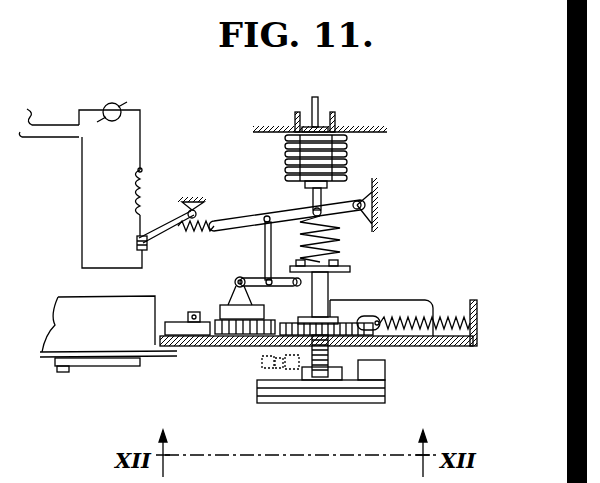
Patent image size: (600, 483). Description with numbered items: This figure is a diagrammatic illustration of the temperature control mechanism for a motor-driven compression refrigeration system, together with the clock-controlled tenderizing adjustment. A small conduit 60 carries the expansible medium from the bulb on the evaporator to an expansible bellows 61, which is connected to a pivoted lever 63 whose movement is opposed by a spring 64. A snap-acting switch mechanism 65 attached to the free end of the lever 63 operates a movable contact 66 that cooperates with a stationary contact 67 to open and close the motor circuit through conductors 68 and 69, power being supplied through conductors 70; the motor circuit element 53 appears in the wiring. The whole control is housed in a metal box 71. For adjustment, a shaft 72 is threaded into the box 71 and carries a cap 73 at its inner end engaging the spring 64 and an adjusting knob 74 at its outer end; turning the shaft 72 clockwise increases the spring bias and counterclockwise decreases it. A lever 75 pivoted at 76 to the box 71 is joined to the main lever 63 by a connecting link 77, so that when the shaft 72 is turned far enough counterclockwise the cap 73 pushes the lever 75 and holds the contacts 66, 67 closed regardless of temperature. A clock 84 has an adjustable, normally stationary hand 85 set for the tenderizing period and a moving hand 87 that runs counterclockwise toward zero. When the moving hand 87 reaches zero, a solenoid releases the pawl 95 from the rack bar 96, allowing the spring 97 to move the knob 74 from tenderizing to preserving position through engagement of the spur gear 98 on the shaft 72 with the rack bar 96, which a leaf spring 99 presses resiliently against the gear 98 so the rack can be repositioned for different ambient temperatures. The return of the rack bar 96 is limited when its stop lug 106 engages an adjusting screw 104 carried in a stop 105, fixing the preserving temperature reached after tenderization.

The motor 53 is at (122, 107).
The conduit 60 is at (322, 110).
The expansible bellows 61 is at (287, 145).
The pivoted lever 63 is at (262, 218).
The spring 64 is at (340, 238).
The snap-acting switch mechanism 65 is at (161, 214).
The movable contact 66 is at (148, 241).
The stationary contact 67 is at (137, 246).
The conductor 68 is at (79, 205).
The conductor 69 is at (140, 157).
The conductors 70 is at (45, 115).
The metal box 71 is at (430, 347).
The shaft 72 is at (322, 288).
The cap 73 is at (302, 260).
The adjusting knob 74 is at (370, 403).
The lever 75 is at (269, 271).
The pivot 76 is at (235, 282).
The connecting link 77 is at (265, 246).
The clock 84 is at (62, 318).
The adjustable hand 85 is at (114, 366).
The moving hand 87 is at (80, 372).
The pawl 95 is at (190, 325).
The rack bar 96 is at (212, 346).
The spring 97 is at (440, 322).
The spur gear 98 is at (362, 318).
The leaf spring 99 is at (400, 312).
The adjusting screw 104 is at (262, 365).
The stop 105 is at (290, 378).
The stop lug 106 is at (385, 375).